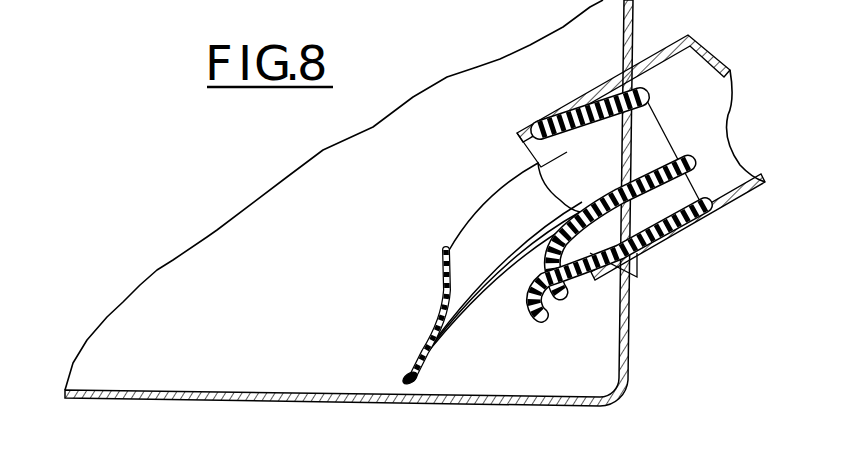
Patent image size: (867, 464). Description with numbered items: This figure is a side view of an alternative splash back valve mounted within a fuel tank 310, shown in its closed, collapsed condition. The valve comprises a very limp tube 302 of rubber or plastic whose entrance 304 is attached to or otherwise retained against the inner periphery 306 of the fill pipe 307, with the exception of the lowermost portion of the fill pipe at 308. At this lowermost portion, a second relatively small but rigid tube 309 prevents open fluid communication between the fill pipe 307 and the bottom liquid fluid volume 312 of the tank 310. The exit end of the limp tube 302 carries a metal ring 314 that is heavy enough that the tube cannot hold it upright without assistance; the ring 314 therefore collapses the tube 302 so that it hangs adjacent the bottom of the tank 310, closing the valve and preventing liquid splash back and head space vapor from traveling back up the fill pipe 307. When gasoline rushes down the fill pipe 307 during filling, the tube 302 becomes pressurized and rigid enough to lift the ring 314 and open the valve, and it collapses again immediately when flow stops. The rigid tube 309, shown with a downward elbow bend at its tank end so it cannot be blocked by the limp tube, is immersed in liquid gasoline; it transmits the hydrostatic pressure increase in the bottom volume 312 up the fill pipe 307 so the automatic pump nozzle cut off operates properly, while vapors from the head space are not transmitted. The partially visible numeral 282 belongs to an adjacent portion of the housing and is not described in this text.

The housing 282 is at (235, 6).
The limp tube 302 is at (450, 253).
The entrance 304 is at (611, 129).
The inner periphery 306 is at (653, 63).
The fill pipe 307 is at (698, 232).
The lowermost portion of the fill pipe 308 is at (708, 196).
The rigid tube 309 is at (580, 237).
The tank 310 is at (498, 397).
The bottom liquid fluid volume 312 is at (298, 285).
The metal ring 314 is at (417, 380).